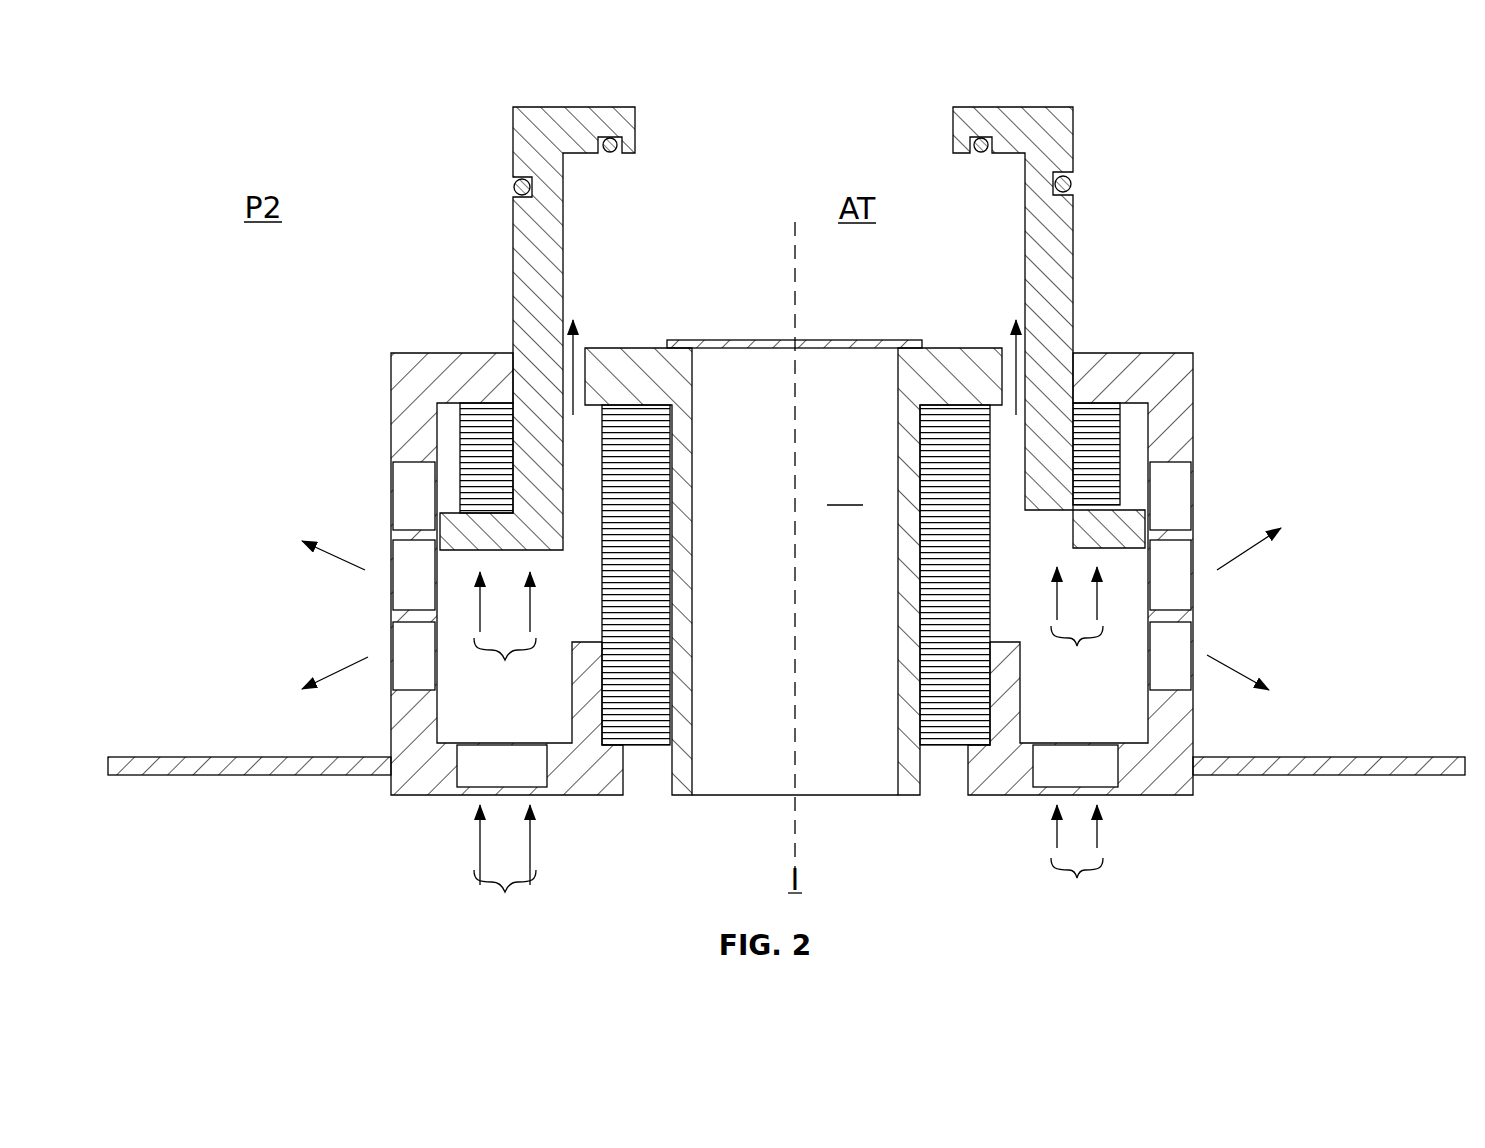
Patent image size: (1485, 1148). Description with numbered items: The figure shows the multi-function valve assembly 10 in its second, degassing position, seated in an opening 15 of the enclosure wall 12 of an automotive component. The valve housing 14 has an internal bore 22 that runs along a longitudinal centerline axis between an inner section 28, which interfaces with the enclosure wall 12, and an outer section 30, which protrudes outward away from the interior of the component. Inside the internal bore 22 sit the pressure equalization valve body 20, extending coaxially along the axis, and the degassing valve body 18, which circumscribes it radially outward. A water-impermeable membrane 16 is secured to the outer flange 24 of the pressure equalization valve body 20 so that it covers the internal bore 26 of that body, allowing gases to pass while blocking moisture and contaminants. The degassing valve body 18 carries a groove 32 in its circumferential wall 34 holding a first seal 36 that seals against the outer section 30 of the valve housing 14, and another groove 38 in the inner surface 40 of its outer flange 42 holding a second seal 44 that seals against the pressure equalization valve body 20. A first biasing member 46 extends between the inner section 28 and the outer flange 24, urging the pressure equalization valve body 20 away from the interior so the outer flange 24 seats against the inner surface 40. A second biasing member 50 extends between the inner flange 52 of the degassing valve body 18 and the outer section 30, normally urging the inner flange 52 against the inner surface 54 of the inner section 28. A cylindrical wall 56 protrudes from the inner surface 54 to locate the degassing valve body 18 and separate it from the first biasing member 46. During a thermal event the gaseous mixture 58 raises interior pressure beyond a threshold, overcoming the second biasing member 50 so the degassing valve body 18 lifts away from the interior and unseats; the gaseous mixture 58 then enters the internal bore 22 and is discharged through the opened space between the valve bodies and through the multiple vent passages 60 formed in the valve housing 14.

The multi-function valve assembly 10 is at (1253, 207).
The enclosure wall 12 is at (1368, 757).
The valve housing 14 is at (1115, 598).
The opening 15 is at (386, 796).
The water-impermeable membrane 16 is at (778, 340).
The degassing valve body 18 is at (547, 301).
The pressure equalization valve body 20 is at (680, 798).
The internal bore 22 is at (600, 508).
The outer flange 24 is at (946, 350).
The internal bore 26 is at (795, 634).
The inner section 28 is at (580, 775).
The outer section 30 is at (480, 581).
The groove 32 is at (560, 205).
The circumferential wall 34 is at (514, 272).
The first seal 36 is at (514, 185).
The groove 38 is at (612, 136).
The inner surface 40 is at (626, 154).
The outer flange 42 is at (993, 126).
The second seal 44 is at (607, 138).
The first biasing member 46 is at (950, 720).
The second biasing member 50 is at (1110, 428).
The inner flange 52 is at (1130, 533).
The inner surface 54 is at (452, 738).
The cylindrical wall 56 is at (582, 704).
The gaseous mixture 58 is at (546, 350).
The vent passages 60 is at (405, 472).